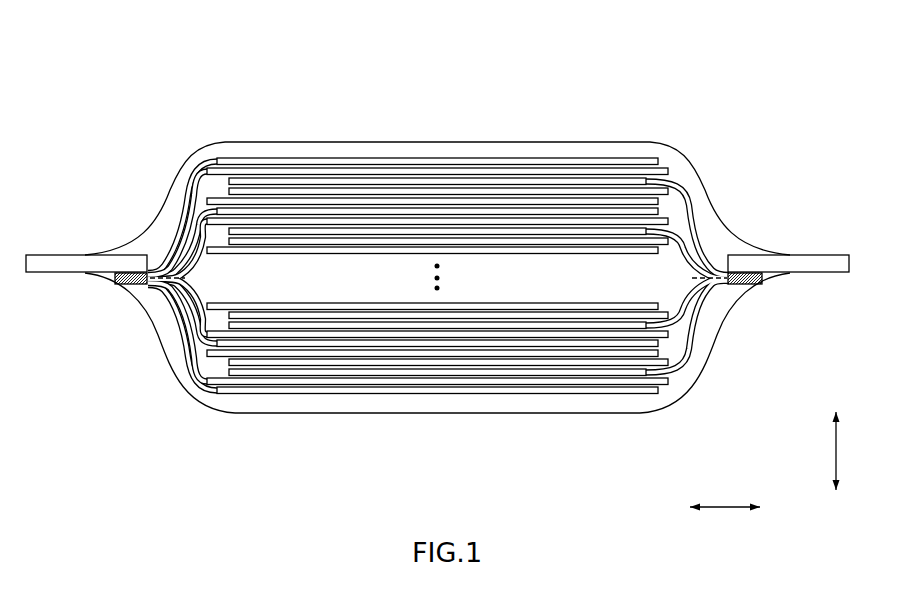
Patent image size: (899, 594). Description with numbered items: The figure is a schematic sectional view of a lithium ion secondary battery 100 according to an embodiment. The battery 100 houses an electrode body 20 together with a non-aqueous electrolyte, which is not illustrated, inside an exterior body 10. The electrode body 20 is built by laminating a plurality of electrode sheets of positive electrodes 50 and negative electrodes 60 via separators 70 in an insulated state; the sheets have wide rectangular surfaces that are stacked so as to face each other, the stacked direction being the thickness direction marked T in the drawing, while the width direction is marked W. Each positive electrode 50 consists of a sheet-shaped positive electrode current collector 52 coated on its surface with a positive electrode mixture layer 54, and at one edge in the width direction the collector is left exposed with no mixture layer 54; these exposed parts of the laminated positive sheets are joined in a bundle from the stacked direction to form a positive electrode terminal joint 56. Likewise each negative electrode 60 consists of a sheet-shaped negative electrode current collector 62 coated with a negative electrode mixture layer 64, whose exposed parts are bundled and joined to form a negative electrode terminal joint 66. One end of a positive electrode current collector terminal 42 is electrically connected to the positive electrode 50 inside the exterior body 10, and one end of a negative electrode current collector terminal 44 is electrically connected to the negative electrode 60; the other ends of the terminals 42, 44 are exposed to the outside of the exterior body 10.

The lithium ion secondary battery 100 is at (639, 72).
The exterior body 10 is at (315, 141).
The electrode body 20 is at (530, 414).
The positive electrode current collector terminal 42 is at (62, 254).
The negative electrode current collector terminal 44 is at (826, 254).
The positive electrode 50 is at (108, 147).
The positive electrode current collector 52 is at (187, 192).
The positive electrode mixture layer 54 is at (217, 159).
The positive electrode terminal joint 56 is at (140, 288).
The negative electrode 60 is at (779, 190).
The negative electrode current collector 62 is at (692, 205).
The negative electrode mixture layer 64 is at (677, 183).
The negative electrode terminal joint 66 is at (745, 288).
The separator 70 is at (388, 203).